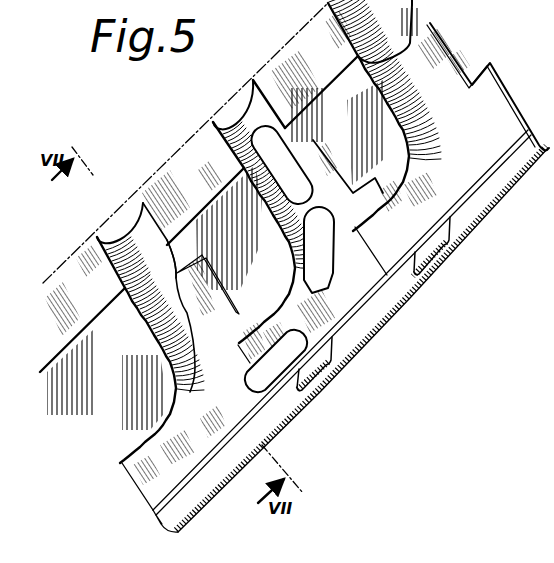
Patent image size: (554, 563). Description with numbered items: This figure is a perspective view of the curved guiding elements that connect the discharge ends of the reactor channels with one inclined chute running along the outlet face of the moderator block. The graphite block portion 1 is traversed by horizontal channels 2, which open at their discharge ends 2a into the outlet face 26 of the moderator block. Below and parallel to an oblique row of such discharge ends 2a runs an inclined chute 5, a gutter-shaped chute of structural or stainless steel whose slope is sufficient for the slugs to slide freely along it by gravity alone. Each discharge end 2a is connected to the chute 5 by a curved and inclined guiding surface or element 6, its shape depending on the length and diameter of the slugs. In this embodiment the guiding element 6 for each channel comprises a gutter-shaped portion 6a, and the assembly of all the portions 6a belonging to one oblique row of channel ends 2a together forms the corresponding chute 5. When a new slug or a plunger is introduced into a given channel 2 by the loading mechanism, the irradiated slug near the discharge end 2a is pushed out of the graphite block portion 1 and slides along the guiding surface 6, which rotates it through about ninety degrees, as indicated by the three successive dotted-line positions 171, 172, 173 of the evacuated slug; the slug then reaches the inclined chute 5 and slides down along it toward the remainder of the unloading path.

The graphite block portion 1 is at (195, 152).
The horizontal channel 2 is at (133, 205).
The discharge end 2a is at (175, 275).
The inclined chute 5 is at (367, 323).
The curved guiding element 6 is at (442, 62).
The gutter-shaped portion 6a is at (418, 267).
The first slug position 171 is at (287, 167).
The second slug position 172 is at (318, 253).
The third slug position 173 is at (283, 357).
The outlet face 26 is at (331, 84).